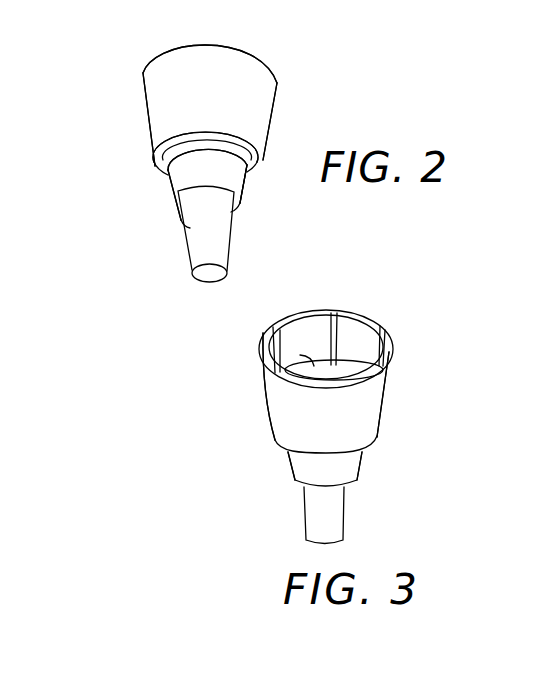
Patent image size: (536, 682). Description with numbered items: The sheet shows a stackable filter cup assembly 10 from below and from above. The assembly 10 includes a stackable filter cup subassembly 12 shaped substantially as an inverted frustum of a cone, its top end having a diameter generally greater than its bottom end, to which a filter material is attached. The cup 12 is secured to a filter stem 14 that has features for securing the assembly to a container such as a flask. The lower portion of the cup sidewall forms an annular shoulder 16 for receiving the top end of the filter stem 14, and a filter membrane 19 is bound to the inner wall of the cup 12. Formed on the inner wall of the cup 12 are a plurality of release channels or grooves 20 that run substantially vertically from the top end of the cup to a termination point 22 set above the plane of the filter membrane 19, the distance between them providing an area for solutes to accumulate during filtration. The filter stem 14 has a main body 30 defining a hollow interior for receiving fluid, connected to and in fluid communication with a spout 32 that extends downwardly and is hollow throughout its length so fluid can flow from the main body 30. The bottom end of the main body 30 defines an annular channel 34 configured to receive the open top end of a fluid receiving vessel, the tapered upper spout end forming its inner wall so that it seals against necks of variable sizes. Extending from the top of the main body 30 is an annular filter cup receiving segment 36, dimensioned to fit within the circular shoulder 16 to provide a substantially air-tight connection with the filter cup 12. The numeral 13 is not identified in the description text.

In FIG. 2, the stackable filter cup assembly 10 is at (295, 138).
In FIG. 3, the stackable filter cup assembly 10 is at (395, 418).
In FIG. 2, the stackable filter cup subassembly 12 is at (283, 88).
In FIG. 3, the stackable filter cup subassembly 12 is at (395, 368).
In FIG. 2, the cup body 13 is at (162, 110).
In FIG. 3, the cup body 13 is at (283, 432).
In FIG. 2, the filter stem 14 is at (251, 199).
In FIG. 3, the filter stem 14 is at (366, 471).
In FIG. 2, the annular shoulder 16 is at (154, 171).
In FIG. 3, the filter membrane 19 is at (307, 376).
In FIG. 3, the release channels 20 is at (379, 326).
In FIG. 3, the termination point 22 is at (300, 355).
In FIG. 2, the main body 30 is at (170, 192).
In FIG. 3, the main body 30 is at (300, 473).
In FIG. 2, the spout 32 is at (200, 240).
In FIG. 3, the spout 32 is at (313, 511).
In FIG. 2, the annular channel 34 is at (178, 210).
In FIG. 2, the filter cup receiving segment 36 is at (260, 160).